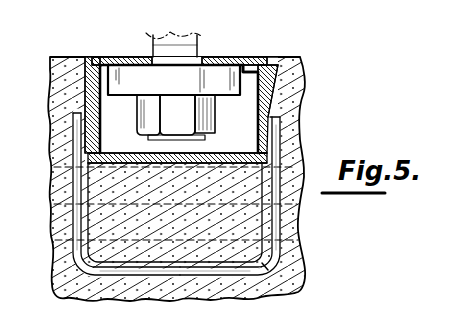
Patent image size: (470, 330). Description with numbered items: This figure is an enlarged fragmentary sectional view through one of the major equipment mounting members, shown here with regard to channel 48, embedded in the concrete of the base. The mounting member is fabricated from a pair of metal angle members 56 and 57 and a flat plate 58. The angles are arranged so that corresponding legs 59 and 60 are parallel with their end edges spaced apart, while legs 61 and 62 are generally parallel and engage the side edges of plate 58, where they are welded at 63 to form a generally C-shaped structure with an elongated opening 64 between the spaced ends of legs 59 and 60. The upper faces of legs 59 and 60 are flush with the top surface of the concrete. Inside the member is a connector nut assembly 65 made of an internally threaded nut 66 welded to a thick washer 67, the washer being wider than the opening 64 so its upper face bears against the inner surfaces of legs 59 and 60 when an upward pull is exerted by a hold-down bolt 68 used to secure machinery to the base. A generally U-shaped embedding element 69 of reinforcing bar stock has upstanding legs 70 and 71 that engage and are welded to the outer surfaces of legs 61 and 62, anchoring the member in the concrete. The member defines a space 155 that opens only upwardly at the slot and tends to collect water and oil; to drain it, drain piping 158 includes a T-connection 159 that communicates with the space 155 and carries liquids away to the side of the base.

The major equipment mounting member 48 is at (265, 57).
The metal angle member 56 is at (94, 55).
The metal angle member 57 is at (246, 56).
The flat plate 58 is at (213, 155).
The leg 59 is at (110, 57).
The leg 60 is at (219, 57).
The leg 61 is at (93, 108).
The leg 62 is at (262, 90).
The weld 63 is at (102, 157).
The elongated opening 64 is at (199, 46).
The connector nut assembly 65 is at (305, 74).
The internally threaded nut 66 is at (174, 80).
The thick washer 67 is at (176, 117).
The hold-down bolt 68 is at (152, 43).
The embedding element 69 is at (270, 284).
The upstanding leg 70 is at (73, 207).
The upstanding leg 71 is at (282, 234).
The space 155 is at (250, 83).
The drain piping 158 is at (300, 256).
The T-connection 159 is at (175, 212).